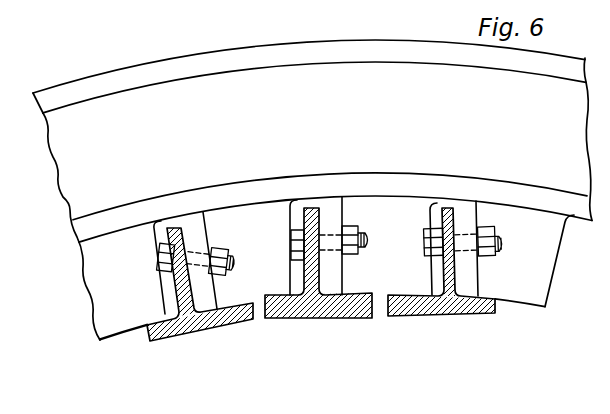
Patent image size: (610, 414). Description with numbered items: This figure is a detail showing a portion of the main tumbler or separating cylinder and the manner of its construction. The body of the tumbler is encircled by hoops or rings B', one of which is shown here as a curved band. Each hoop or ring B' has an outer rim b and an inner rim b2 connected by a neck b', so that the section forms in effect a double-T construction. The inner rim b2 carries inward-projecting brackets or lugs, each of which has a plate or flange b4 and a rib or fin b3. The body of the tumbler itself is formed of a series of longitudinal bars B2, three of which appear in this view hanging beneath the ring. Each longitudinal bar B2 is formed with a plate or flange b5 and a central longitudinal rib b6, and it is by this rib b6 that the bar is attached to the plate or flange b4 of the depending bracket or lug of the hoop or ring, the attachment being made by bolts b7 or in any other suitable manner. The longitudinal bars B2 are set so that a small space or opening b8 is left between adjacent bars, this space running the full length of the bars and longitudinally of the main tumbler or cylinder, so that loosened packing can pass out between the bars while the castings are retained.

The encircling hoop or ring B' is at (312, 179).
The outer rim b is at (310, 52).
The neck b' is at (310, 121).
The inner rim b2 is at (332, 207).
The rib or fin b3 is at (337, 277).
The plate or flange b4 is at (316, 255).
The plate or flange b5 is at (233, 327).
The central longitudinal rib b6 is at (440, 268).
The bolt b7 is at (229, 250).
The space or opening b8 is at (382, 303).
The longitudinal bar B2 is at (188, 333).